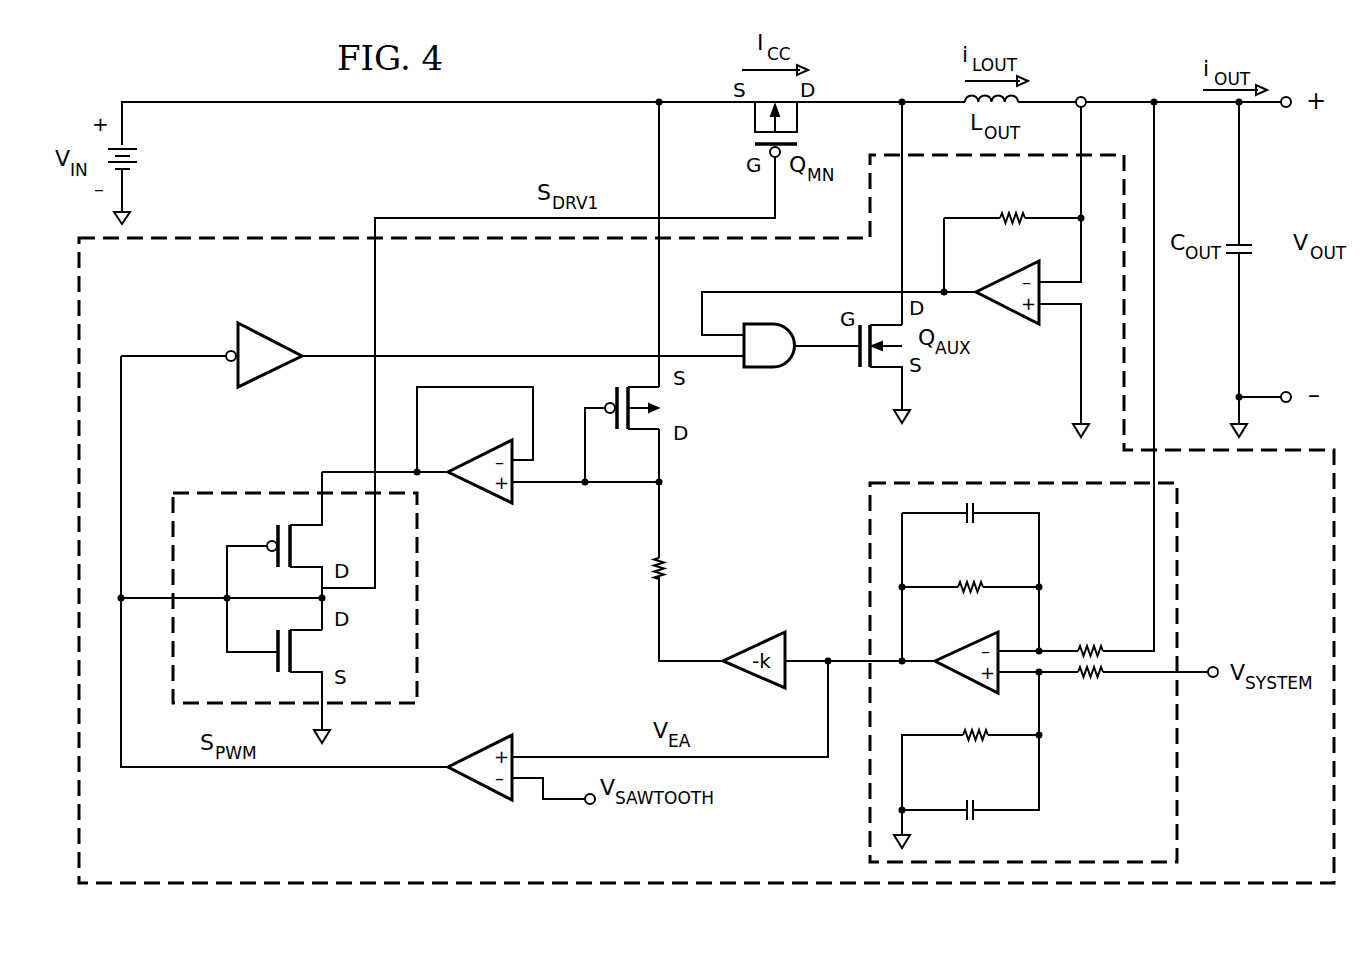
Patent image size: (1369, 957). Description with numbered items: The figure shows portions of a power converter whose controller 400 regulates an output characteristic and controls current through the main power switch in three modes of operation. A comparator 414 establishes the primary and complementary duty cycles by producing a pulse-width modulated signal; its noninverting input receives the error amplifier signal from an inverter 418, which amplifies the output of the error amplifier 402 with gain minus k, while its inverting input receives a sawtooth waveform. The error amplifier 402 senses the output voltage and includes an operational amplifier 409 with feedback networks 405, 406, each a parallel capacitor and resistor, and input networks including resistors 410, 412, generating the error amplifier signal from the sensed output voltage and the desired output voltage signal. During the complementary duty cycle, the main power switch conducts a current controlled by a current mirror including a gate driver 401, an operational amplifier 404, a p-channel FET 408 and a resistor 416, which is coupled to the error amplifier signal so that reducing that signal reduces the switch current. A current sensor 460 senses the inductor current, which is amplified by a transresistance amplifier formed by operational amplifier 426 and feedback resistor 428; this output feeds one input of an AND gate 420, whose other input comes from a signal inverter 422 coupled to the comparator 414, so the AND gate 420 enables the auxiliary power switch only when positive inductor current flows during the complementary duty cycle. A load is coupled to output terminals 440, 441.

The controller 400 is at (284, 239).
The gate driver 401 is at (233, 492).
The error amplifier 402 is at (1179, 762).
The operational amplifier 404 is at (481, 458).
The feedback network 405 is at (975, 742).
The feedback network 406 is at (971, 584).
The p-channel FET 408 is at (615, 400).
The operational amplifier 409 is at (968, 648).
The resistor 410 is at (1092, 680).
The resistor 412 is at (1092, 645).
The comparator 414 is at (482, 750).
The resistor 416 is at (655, 568).
The inverter 418 is at (759, 647).
The AND gate 420 is at (775, 368).
The signal inverter 422 is at (262, 340).
The operational amplifier 426 is at (1010, 278).
The feedback resistor 428 is at (1012, 214).
The output terminal 440 is at (1288, 96).
The output terminal 441 is at (1288, 391).
The current sensor 460 is at (1084, 96).